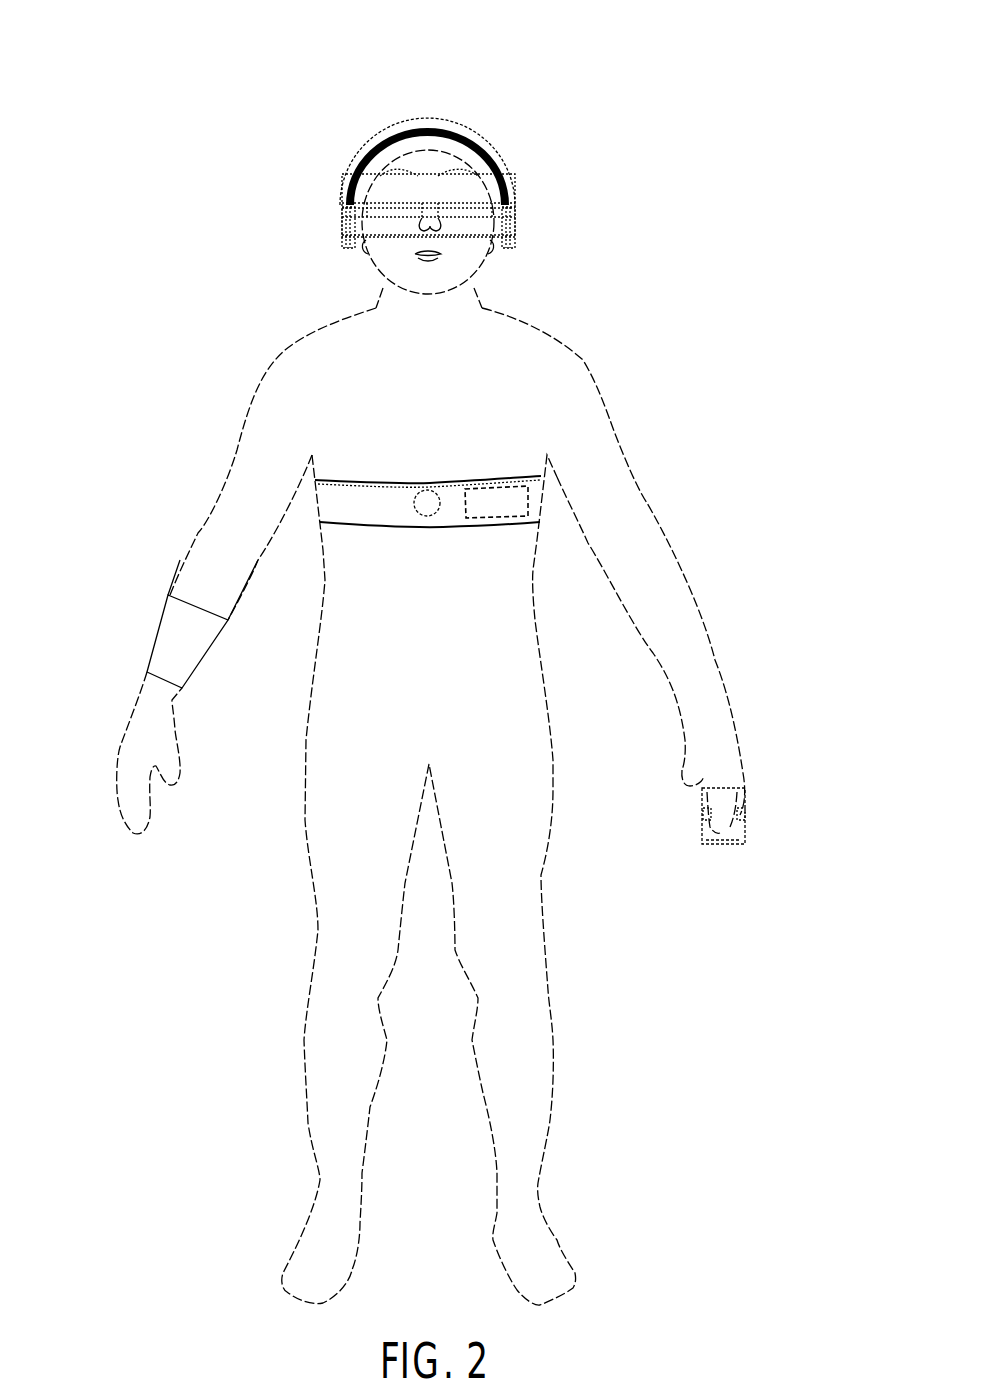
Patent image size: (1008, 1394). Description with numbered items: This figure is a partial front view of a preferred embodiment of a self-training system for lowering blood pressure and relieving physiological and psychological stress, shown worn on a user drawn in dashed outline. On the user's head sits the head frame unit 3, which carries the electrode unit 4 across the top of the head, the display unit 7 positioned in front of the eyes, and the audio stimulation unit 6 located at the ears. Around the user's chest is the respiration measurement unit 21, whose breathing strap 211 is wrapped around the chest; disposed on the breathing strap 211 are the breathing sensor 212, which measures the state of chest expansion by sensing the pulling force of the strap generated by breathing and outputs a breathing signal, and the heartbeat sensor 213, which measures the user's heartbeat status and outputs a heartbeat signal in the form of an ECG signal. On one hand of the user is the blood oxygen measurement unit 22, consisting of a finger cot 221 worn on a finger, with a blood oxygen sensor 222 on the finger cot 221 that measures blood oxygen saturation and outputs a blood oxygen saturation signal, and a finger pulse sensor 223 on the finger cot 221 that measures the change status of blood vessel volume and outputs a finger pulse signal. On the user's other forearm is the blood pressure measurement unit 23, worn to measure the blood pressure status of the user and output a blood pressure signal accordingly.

The head frame unit 3 is at (434, 128).
The electrode unit 4 is at (464, 147).
The display unit 7 is at (432, 182).
The audio stimulation unit 6 is at (357, 251).
The respiration measurement unit 21 is at (493, 478).
The breathing strap 211 is at (541, 483).
The breathing sensor 212 is at (530, 500).
The heartbeat sensor 213 is at (433, 515).
The blood oxygen measurement unit 22 is at (745, 795).
The finger cot 221 is at (730, 838).
The blood oxygen sensor 222 is at (703, 816).
The finger pulse sensor 223 is at (745, 815).
The blood pressure measurement unit 23 is at (155, 634).